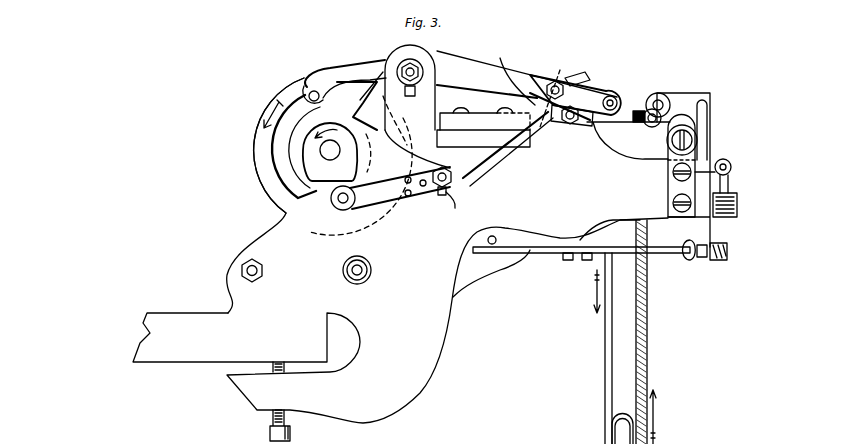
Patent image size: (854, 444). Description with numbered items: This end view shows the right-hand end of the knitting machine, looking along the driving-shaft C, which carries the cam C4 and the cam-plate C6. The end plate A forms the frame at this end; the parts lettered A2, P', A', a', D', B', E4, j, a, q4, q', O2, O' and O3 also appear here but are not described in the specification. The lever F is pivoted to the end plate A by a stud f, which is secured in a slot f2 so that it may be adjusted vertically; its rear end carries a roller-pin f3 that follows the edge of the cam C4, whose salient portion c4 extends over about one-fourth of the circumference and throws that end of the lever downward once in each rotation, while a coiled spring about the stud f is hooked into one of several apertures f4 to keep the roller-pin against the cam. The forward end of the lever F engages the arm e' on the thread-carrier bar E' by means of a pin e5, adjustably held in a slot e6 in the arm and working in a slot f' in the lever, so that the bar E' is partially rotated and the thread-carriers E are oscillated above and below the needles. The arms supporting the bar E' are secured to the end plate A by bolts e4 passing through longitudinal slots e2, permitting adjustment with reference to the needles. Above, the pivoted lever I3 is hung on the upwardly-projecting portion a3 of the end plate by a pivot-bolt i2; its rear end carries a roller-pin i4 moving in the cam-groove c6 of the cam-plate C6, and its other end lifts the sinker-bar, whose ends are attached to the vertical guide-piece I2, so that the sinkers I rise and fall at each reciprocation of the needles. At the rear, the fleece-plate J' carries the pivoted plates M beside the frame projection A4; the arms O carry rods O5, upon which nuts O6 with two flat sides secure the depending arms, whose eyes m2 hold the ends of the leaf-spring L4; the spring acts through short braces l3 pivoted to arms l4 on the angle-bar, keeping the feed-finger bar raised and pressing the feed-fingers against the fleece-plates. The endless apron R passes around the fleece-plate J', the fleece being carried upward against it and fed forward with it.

The end plate A is at (400, 259).
The frame nut A2 is at (263, 271).
The pivot bolt P' is at (367, 272).
The cam-plate C6 is at (262, 140).
The cam-groove c6 is at (277, 165).
The cam C4 is at (330, 152).
The driving-shaft C is at (330, 150).
The roller-pin i4 is at (310, 90).
The upwardly-projecting portion a3 is at (406, 57).
The pivot-bolt i2 is at (418, 80).
The salient portion c4 is at (331, 200).
The lever F is at (407, 187).
The slot f2 is at (441, 197).
The stud f is at (452, 206).
The roller-pin f3 is at (347, 208).
The aperture f4 is at (407, 196).
The thread-carrier E is at (503, 149).
The pivoted lever I3 is at (464, 68).
The sinker I is at (487, 76).
The guide-piece I2 is at (540, 135).
The plate A' is at (483, 138).
The plate edge a' is at (480, 138).
The slide D' is at (485, 121).
The feed wheel B' is at (483, 110).
The thread-carrier bar E' is at (575, 85).
The pin e5 is at (554, 79).
The slot e6 is at (578, 80).
The arm e' is at (604, 92).
The slot f' is at (539, 88).
The longitudinal slot e2 is at (563, 125).
The clamp jaw E4 is at (572, 125).
The bolt e4 is at (573, 128).
The fleece-plate J' is at (647, 95).
The roller pin j is at (645, 108).
The plate a is at (628, 140).
The projection A4 is at (661, 170).
The slide bar q4 is at (686, 125).
The slide screw q' is at (664, 165).
The plate M is at (684, 103).
The arm l4 is at (724, 158).
The brace l3 is at (731, 186).
The eye m2 is at (739, 198).
The leaf-spring L4 is at (738, 212).
The arm O is at (581, 255).
The nut O6 is at (717, 258).
The rod O5 is at (658, 256).
The rail hole O2 is at (501, 241).
The rail arm O' is at (527, 267).
The rail arm O3 is at (486, 275).
The endless apron R is at (603, 348).